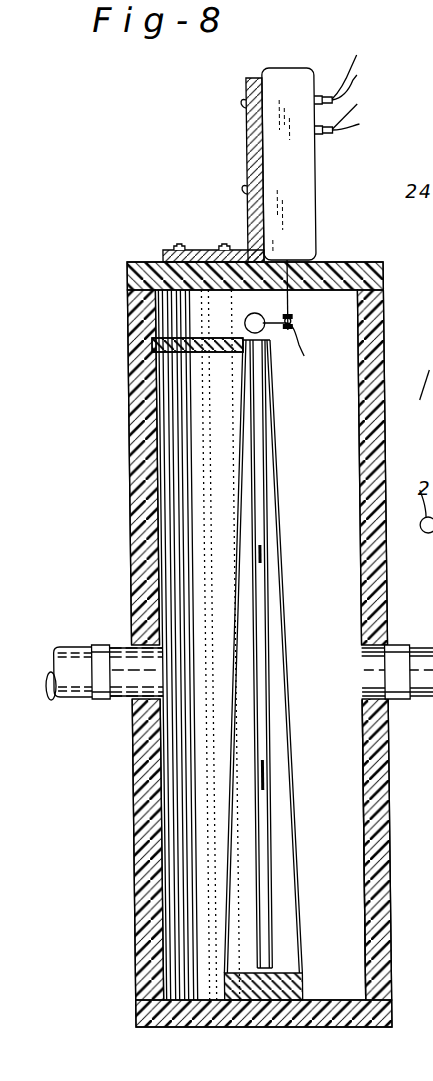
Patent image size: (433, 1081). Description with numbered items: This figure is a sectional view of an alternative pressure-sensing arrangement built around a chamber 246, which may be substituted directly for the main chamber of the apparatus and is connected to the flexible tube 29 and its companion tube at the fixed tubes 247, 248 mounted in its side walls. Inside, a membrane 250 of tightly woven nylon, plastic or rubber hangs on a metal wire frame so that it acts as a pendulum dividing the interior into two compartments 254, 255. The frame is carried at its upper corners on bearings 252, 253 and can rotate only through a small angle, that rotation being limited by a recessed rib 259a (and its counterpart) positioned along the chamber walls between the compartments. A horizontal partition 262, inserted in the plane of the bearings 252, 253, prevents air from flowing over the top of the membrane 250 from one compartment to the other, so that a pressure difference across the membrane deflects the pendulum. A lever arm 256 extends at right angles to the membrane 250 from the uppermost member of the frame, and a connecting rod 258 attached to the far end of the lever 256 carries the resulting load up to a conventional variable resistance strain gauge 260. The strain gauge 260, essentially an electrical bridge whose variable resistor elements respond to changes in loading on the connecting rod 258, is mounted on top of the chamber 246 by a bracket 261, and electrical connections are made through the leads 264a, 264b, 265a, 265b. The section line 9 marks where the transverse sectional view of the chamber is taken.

The section line 9— 9 is at (17, 668).
The flexible tube 29 is at (54, 647).
The chamber 246 is at (124, 448).
The fixed tube 247 is at (90, 647).
The fixed tube 248 is at (397, 645).
The membrane 250 is at (265, 628).
The bearing 252 is at (256, 305).
The bearing 253 is at (396, 620).
The compartment 254 is at (182, 820).
The compartment 255 is at (336, 843).
The lever arm 256 is at (297, 346).
The connecting rod 258 is at (287, 301).
The recessed rib 259a is at (267, 480).
The variable resistance strain gauge 260 is at (315, 190).
The bracket 261 is at (244, 126).
The horizontal partition 262 is at (148, 343).
The lead 264a is at (363, 73).
The lead 264b is at (373, 81).
The lead 265a is at (365, 111).
The lead 265b is at (374, 123).